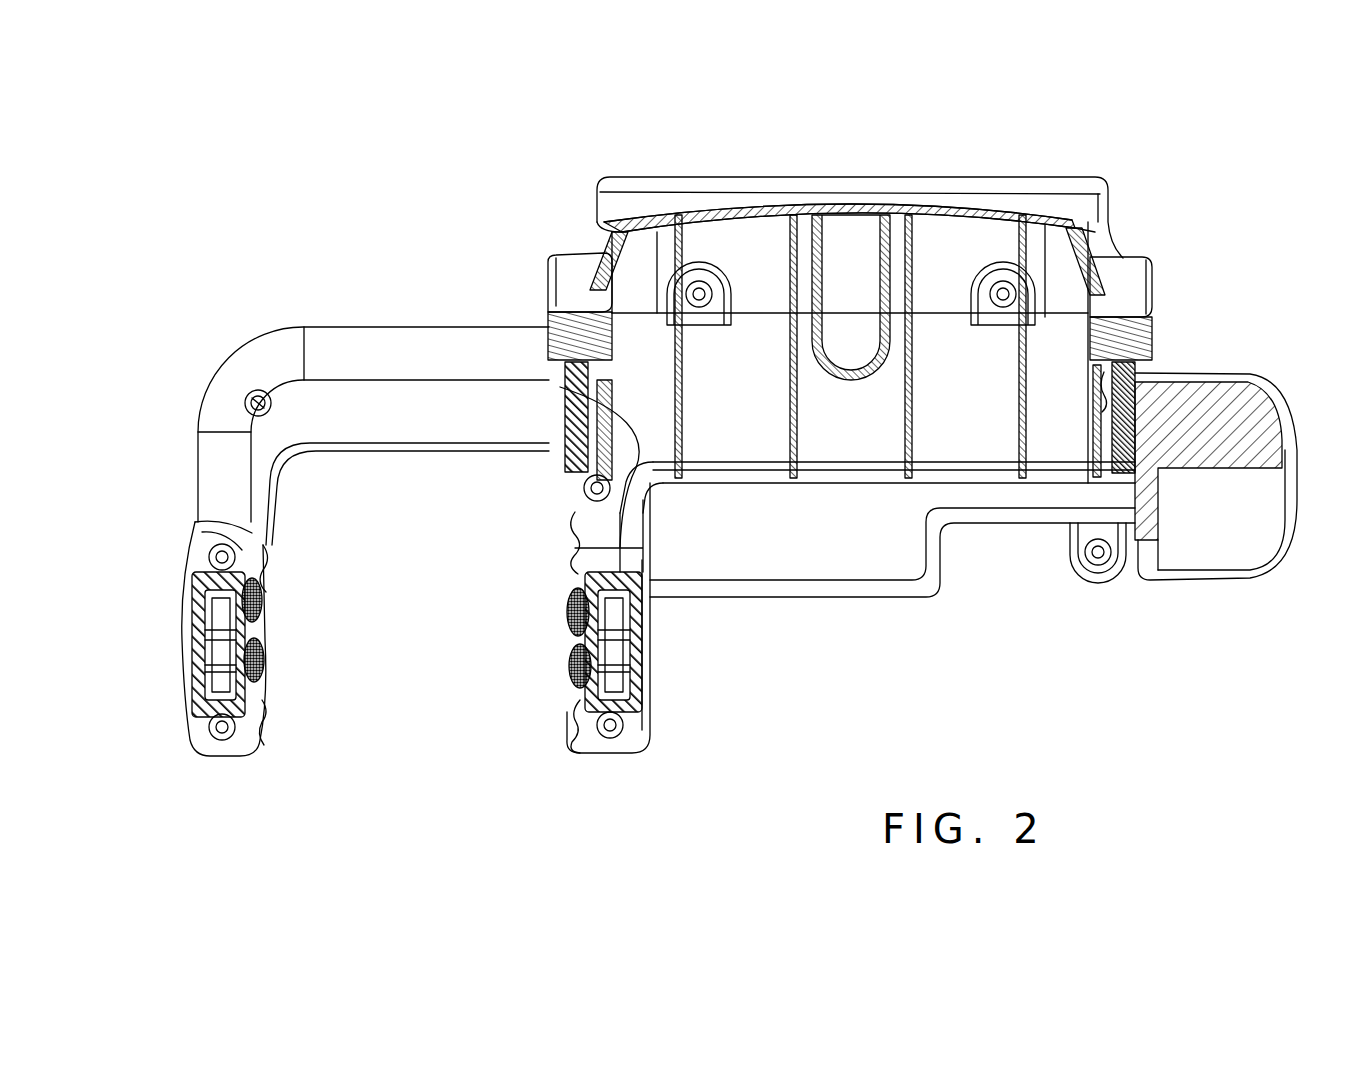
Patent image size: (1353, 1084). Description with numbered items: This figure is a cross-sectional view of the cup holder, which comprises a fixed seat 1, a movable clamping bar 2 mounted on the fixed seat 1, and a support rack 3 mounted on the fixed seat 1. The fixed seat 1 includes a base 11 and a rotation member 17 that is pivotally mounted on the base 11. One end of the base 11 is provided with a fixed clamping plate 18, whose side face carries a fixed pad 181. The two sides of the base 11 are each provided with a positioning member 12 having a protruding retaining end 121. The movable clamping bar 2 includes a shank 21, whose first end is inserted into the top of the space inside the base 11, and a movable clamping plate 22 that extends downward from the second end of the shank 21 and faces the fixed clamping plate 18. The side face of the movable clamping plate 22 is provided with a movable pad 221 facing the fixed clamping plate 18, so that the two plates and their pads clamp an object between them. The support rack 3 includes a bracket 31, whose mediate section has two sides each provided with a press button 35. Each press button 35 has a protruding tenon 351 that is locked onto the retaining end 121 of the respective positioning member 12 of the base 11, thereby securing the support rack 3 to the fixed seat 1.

The fixed seat 1 is at (868, 540).
The movable clamping bar 2 is at (321, 469).
The support rack 3 is at (890, 261).
The base 11 is at (782, 568).
The positioning member 12 is at (1138, 428).
The rotation member 17 is at (1201, 538).
The fixed clamping plate 18 is at (597, 749).
The shank 21 is at (352, 343).
The movable clamping plate 22 is at (183, 638).
The bracket 31 is at (1050, 228).
The press button 35 is at (580, 276).
The retaining end 121 is at (1148, 366).
The fixed pad 181 is at (578, 676).
The movable pad 221 is at (232, 678).
The tenon 351 is at (620, 516).